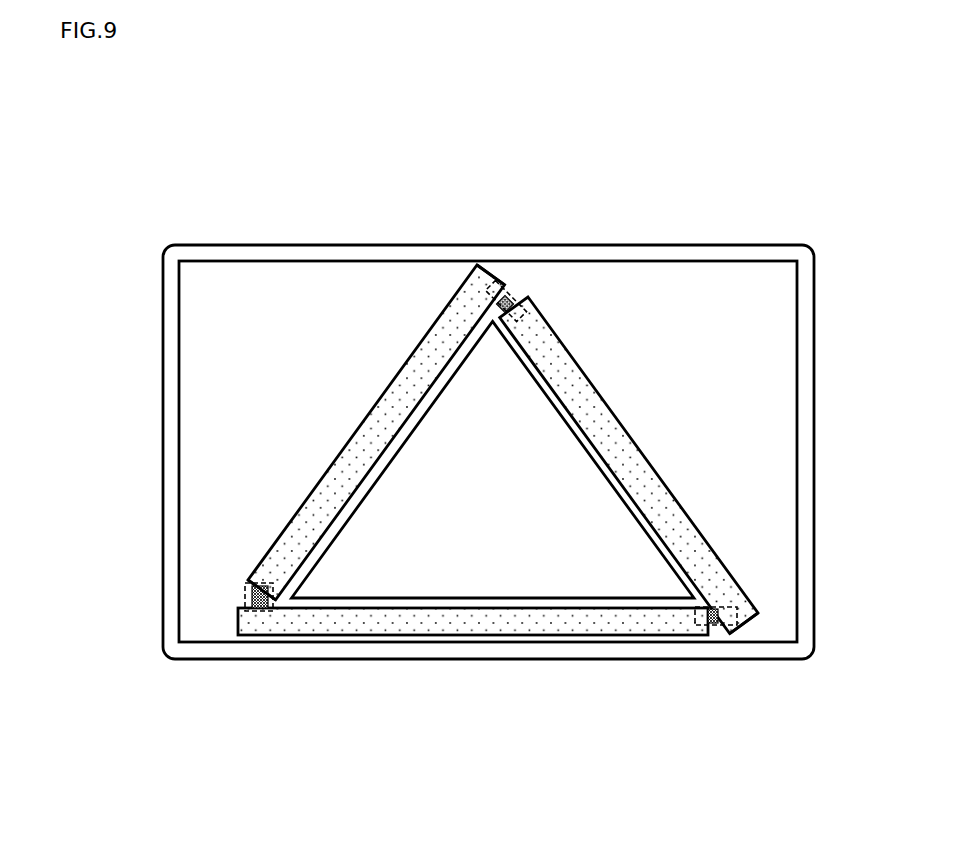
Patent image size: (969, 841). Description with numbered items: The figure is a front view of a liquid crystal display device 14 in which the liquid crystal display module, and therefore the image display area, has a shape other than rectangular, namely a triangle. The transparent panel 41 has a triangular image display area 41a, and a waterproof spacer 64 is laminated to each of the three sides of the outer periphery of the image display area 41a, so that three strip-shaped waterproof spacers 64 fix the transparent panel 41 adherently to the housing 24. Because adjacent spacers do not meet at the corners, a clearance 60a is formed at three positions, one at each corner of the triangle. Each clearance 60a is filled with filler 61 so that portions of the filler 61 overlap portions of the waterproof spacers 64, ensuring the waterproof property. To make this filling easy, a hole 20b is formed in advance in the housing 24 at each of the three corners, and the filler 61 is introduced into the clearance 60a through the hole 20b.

The liquid crystal display device 14 is at (478, 95).
The housing 24 is at (172, 272).
The transparent panel 41 is at (193, 355).
The image display area 41a is at (408, 525).
The waterproof spacer 64 is at (387, 417).
The filler 61 is at (505, 298).
The clearance 60a is at (518, 295).
The hole 20b is at (477, 265).